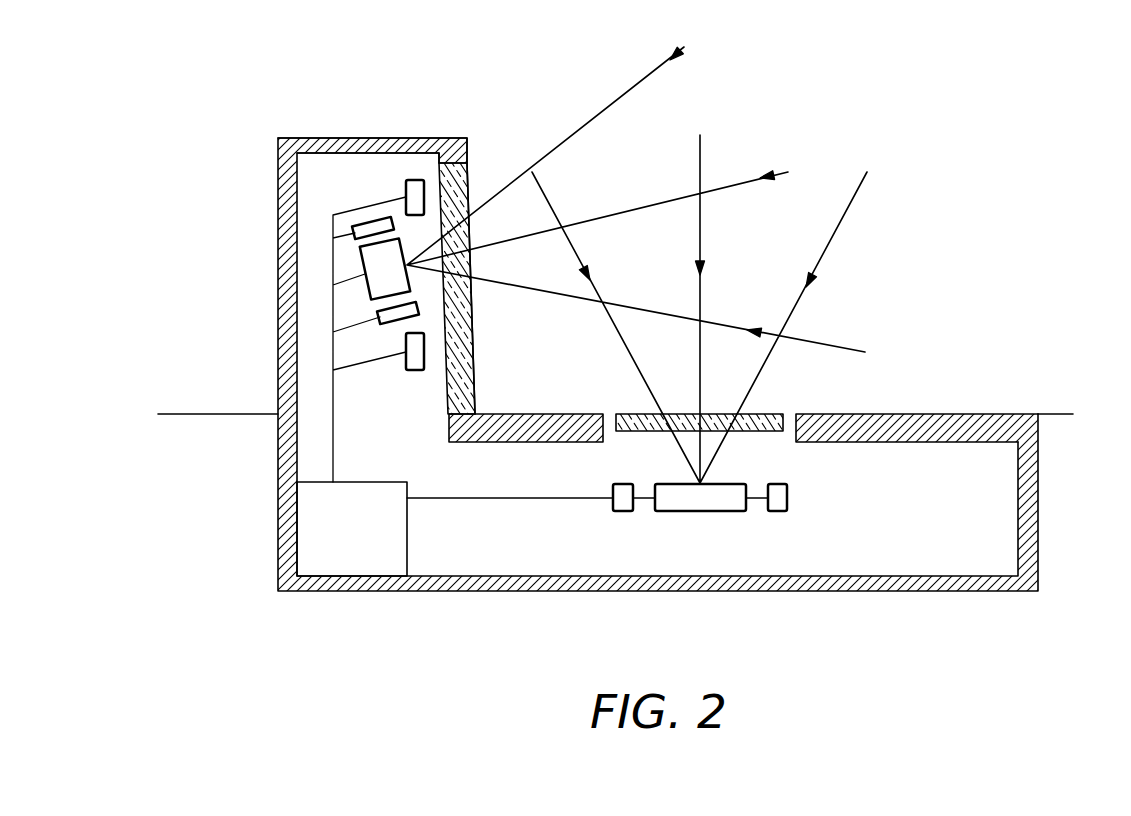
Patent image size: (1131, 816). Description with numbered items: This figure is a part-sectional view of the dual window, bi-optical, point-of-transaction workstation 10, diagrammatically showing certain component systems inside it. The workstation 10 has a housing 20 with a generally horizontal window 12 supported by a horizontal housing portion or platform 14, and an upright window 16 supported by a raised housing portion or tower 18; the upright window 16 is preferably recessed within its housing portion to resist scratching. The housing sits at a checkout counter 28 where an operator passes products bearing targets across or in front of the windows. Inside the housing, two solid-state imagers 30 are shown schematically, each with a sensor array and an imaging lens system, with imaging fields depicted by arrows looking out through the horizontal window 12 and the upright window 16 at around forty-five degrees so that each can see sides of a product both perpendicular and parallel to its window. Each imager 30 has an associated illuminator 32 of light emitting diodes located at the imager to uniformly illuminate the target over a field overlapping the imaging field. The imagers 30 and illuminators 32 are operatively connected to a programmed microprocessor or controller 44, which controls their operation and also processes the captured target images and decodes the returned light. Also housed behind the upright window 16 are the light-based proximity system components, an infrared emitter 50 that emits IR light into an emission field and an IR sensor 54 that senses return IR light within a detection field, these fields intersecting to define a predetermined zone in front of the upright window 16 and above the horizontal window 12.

The workstation 10 is at (946, 349).
The horizontal window 12 is at (763, 413).
The platform 14 is at (972, 412).
The upright window 16 is at (467, 193).
The tower 18 is at (463, 148).
The housing 20 is at (344, 124).
The checkout counter 28 is at (1062, 412).
The imager 30 is at (758, 605).
The illuminator 32 is at (902, 605).
The controller 44 is at (348, 551).
The IR emitter 50 is at (413, 180).
The IR sensor 54 is at (425, 351).